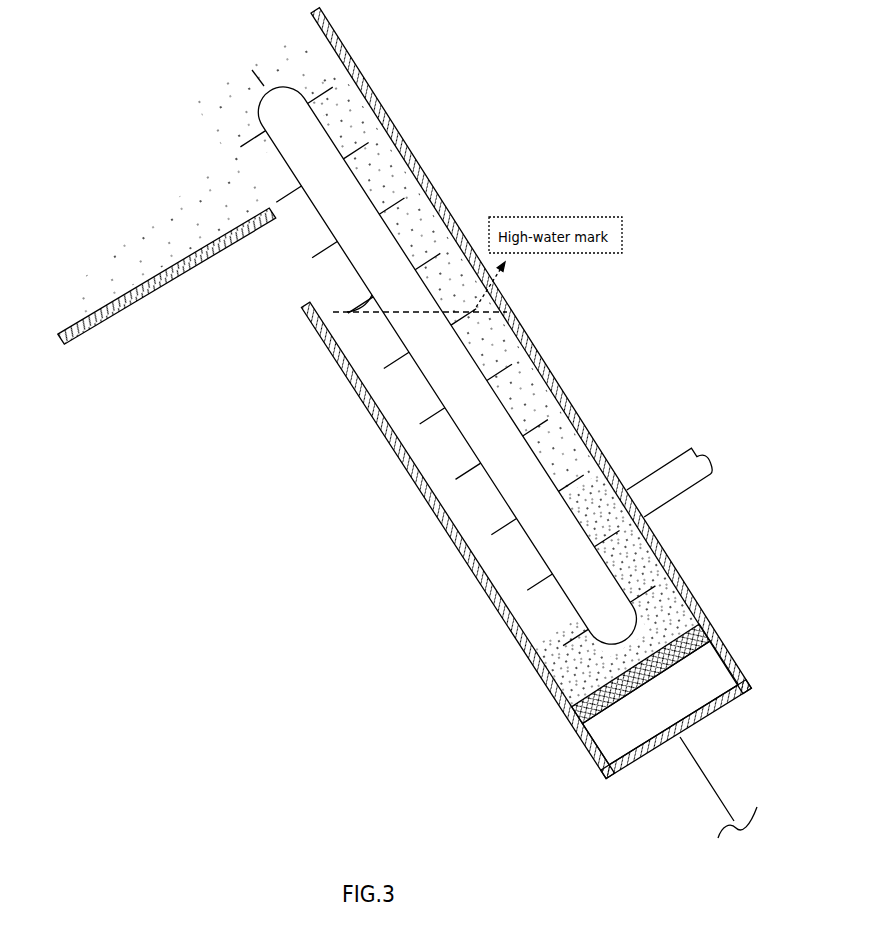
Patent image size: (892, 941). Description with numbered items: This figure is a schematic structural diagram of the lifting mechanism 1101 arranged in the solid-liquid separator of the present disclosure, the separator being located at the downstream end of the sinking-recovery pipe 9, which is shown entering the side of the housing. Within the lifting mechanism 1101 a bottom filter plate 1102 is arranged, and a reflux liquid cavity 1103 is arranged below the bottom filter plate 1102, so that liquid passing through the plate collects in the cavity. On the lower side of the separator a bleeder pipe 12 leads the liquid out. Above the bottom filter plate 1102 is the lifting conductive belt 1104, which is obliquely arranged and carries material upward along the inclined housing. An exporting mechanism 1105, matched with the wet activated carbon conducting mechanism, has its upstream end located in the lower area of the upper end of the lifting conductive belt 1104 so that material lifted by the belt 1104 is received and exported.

The sinking-recovery pipe 9 is at (653, 475).
The bleeder pipe 12 is at (693, 758).
The lifting mechanism 1101 is at (665, 563).
The bottom filter plate 1102 is at (708, 634).
The reflux liquid cavity 1103 is at (613, 737).
The lifting conductive belt 1104 is at (510, 415).
The exporting mechanism 1105 is at (160, 292).